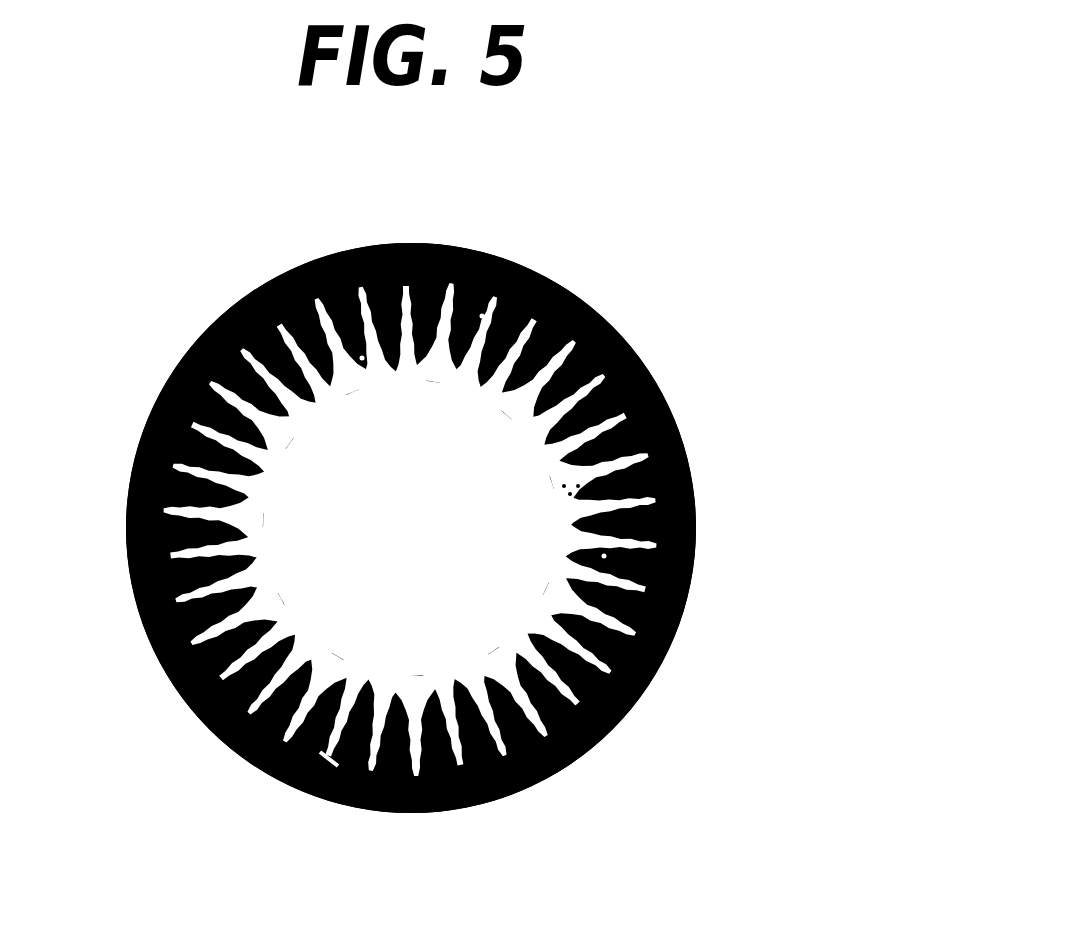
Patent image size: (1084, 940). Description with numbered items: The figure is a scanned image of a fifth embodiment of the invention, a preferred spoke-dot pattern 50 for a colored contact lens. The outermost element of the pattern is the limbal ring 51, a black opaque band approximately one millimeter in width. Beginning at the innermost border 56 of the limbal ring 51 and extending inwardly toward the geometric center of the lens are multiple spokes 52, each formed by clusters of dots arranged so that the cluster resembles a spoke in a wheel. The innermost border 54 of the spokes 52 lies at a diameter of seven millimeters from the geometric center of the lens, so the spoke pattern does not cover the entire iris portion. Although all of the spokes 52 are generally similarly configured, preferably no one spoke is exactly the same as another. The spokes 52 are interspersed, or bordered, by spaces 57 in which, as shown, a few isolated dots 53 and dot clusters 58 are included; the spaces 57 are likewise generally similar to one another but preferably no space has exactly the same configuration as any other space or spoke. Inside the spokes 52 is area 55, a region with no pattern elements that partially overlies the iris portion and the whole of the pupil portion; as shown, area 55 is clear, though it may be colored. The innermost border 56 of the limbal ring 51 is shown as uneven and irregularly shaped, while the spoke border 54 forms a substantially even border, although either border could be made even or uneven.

The spoke-dot pattern 50 is at (811, 429).
The limbal ring 51 is at (638, 670).
The spokes 52 is at (293, 735).
The isolated dots 53 is at (600, 597).
The innermost border of the spokes 54 is at (573, 490).
The area 55 is at (440, 542).
The innermost border of the limbal ring 56 is at (333, 757).
The spaces 57 is at (358, 362).
The dot clusters 58 is at (403, 350).